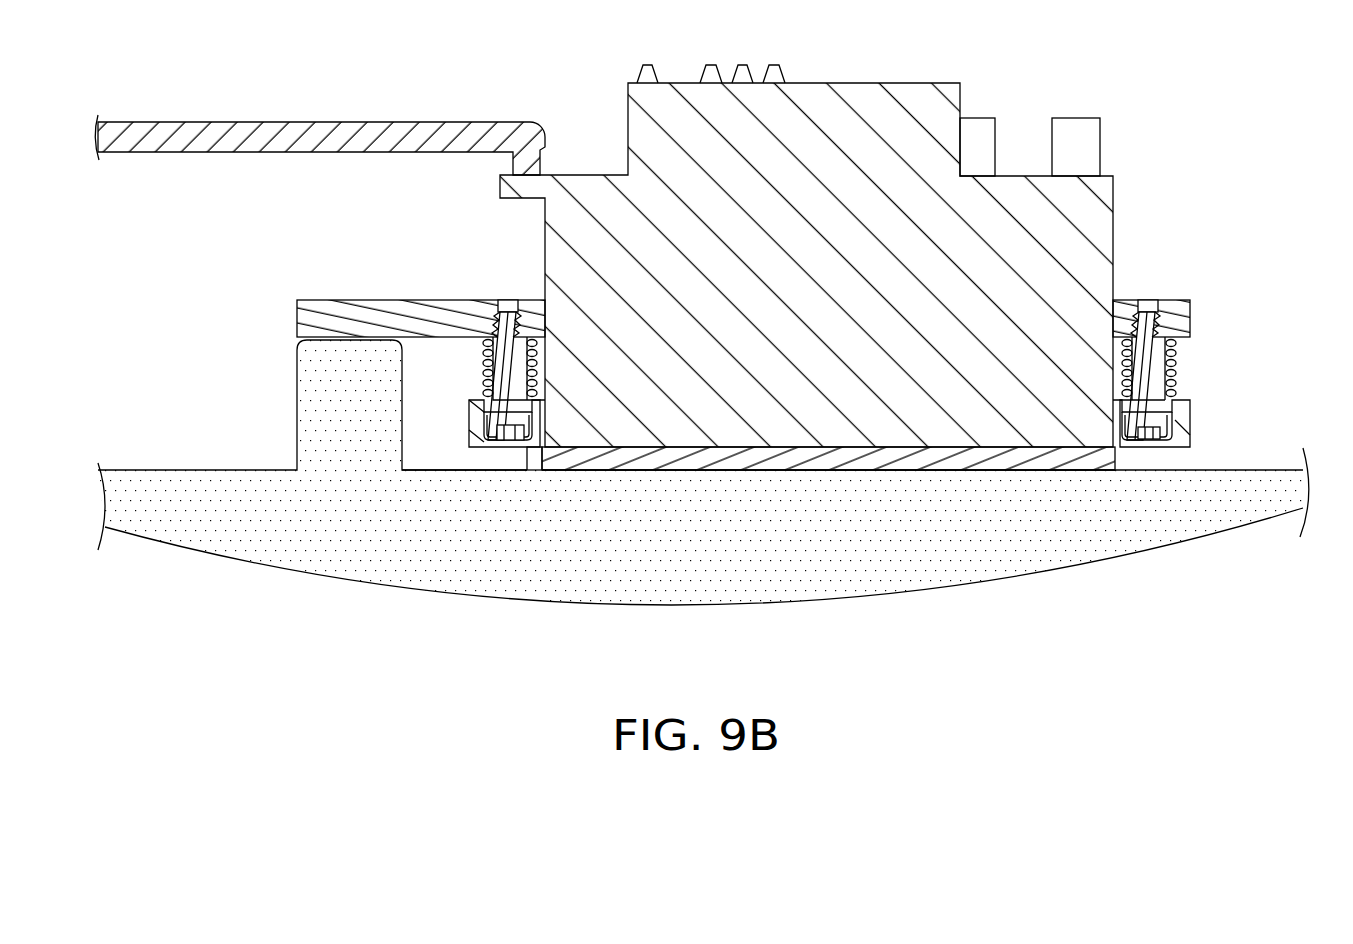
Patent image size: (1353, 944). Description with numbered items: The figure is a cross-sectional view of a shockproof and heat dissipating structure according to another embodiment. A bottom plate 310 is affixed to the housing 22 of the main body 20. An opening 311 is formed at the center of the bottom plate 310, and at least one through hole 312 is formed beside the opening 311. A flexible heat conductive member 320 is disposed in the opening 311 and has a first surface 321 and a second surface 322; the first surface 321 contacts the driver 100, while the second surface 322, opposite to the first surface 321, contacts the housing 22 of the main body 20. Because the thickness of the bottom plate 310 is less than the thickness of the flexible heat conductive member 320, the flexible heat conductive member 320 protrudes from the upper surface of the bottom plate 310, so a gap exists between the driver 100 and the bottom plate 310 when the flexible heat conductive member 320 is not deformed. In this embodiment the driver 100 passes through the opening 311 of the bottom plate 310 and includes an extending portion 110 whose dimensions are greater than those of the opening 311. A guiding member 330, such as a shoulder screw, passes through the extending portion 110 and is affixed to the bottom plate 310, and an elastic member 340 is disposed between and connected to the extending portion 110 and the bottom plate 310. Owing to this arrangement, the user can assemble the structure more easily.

The main body 20 is at (1187, 551).
The housing 22 is at (1015, 530).
The driver 100 is at (1139, 206).
The extending portion 110 is at (477, 422).
The bottom plate 310 is at (327, 318).
The opening 311 is at (545, 317).
The through hole 312 is at (511, 308).
The flexible heat conductive member 320 is at (883, 460).
The first surface 321 is at (958, 447).
The second surface 322 is at (798, 470).
The guiding member 330 is at (517, 402).
The elastic member 340 is at (483, 377).